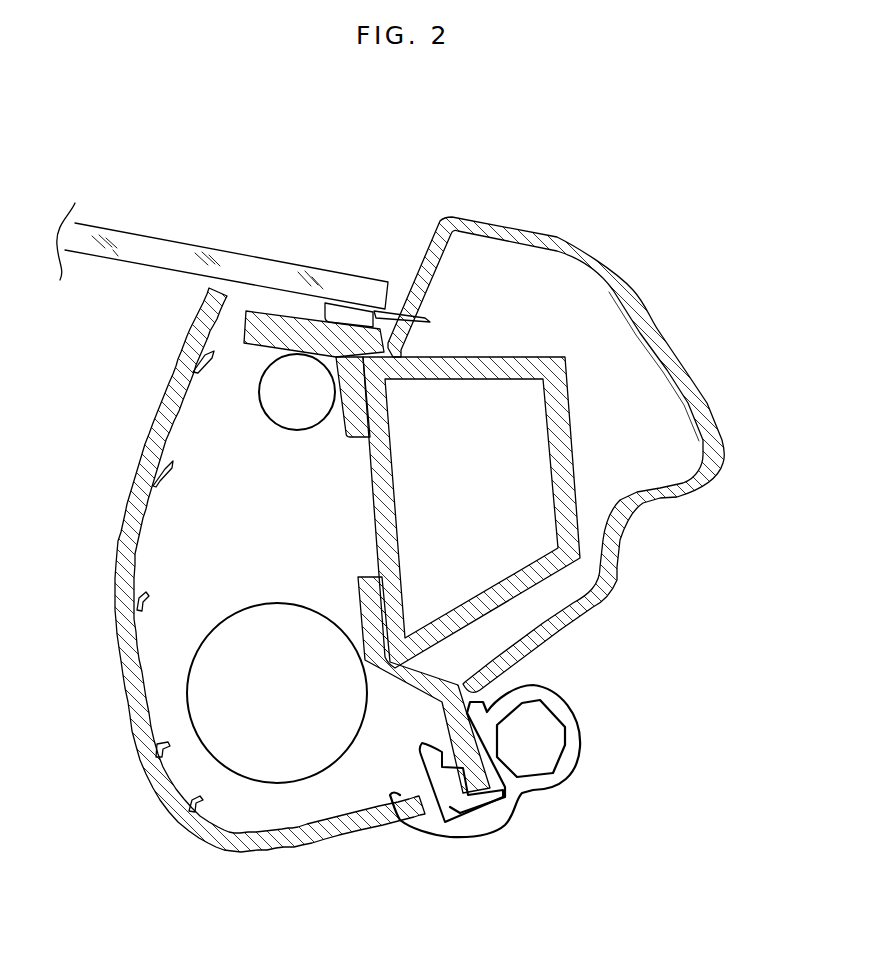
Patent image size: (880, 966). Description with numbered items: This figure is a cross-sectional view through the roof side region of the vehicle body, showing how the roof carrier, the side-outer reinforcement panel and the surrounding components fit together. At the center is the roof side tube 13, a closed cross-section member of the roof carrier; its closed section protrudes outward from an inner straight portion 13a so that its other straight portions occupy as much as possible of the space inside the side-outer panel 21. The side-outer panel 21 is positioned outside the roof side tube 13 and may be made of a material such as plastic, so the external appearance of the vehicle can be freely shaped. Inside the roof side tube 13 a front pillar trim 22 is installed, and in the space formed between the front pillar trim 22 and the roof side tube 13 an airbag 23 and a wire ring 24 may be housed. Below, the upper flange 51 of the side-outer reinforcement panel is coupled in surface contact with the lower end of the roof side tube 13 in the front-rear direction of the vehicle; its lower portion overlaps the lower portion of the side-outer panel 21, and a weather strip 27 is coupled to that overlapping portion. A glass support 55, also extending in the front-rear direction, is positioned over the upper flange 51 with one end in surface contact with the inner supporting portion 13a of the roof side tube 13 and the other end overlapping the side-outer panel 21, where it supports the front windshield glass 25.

The roof side tube 13 is at (560, 428).
The inner straight portion 13a is at (392, 522).
The side-outer panel 21 is at (658, 340).
The front pillar trim 22 is at (125, 597).
The airbag 23 is at (207, 704).
The wire ring 24 is at (283, 398).
The front windshield glass 25 is at (172, 245).
The weather strip 27 is at (580, 736).
The upper flange 51 is at (400, 680).
The glass support 55 is at (247, 330).